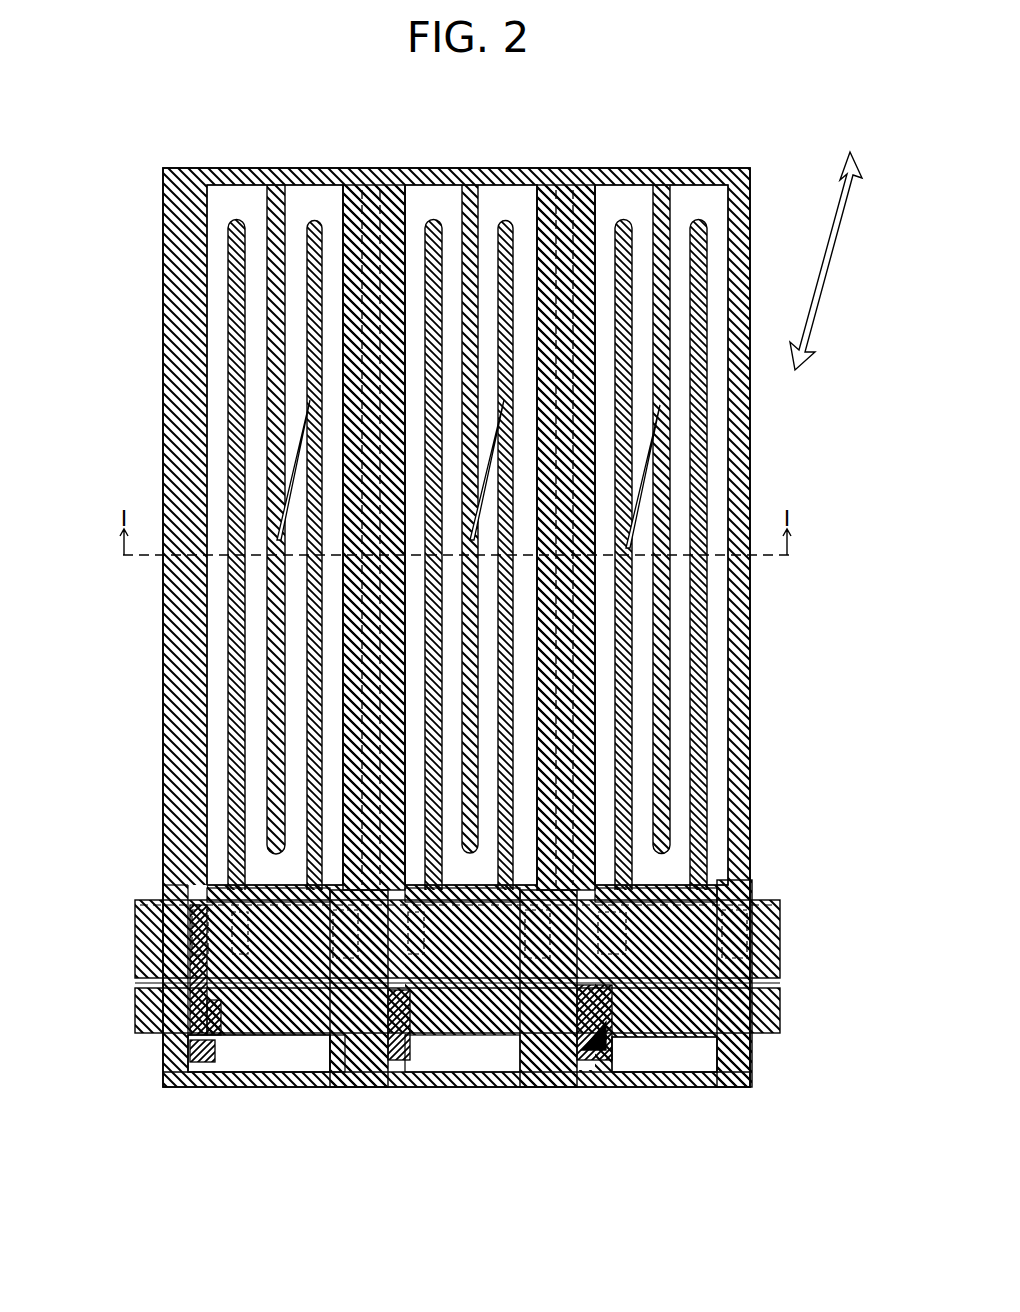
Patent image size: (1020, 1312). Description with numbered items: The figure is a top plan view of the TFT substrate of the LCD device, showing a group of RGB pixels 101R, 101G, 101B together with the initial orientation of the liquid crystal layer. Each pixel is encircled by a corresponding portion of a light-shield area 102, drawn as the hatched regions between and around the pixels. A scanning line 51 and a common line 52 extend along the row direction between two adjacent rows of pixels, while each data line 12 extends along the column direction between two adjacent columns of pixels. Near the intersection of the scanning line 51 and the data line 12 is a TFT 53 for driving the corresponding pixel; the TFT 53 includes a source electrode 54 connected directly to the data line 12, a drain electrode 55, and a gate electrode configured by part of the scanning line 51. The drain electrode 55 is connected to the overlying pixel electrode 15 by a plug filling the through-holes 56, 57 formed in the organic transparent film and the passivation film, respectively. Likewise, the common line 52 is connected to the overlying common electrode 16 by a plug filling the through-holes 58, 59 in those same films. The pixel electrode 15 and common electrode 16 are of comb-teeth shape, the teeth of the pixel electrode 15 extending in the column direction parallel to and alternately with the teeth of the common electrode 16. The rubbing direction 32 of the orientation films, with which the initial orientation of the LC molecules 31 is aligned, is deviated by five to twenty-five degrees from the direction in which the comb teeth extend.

The data line 12 is at (164, 368).
The pixel electrode 15 is at (232, 324).
The common electrode 16 is at (180, 272).
The LC molecules 31 is at (653, 475).
The rubbing direction 32 is at (818, 268).
The scanning line 51 is at (637, 1037).
The common line 52 is at (780, 938).
The TFT 53 is at (713, 1168).
The source electrode 54 is at (600, 1067).
The drain electrode 55 is at (697, 1037).
The through-hole 56 is at (255, 1042).
The through-hole 57 is at (236, 1042).
The through-hole 58 is at (380, 1042).
The through-hole 59 is at (346, 1042).
The R pixel 101R is at (195, 160).
The B pixel 101B is at (545, 160).
The G pixel 101G is at (760, 150).
The light-shield area 102 is at (195, 160).